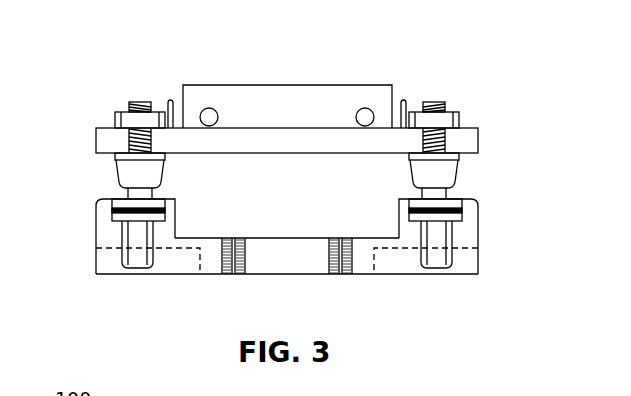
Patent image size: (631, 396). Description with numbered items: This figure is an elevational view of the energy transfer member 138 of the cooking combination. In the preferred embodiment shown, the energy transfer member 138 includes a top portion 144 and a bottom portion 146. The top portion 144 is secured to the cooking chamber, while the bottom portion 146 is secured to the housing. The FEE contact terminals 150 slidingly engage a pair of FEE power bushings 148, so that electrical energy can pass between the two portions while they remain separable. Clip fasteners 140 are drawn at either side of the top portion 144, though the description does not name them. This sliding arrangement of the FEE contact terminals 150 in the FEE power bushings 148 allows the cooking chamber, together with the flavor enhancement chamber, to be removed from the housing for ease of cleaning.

The energy transfer member 138 is at (262, 32).
The clip fastener 140 is at (170, 100).
The top portion 144 is at (337, 85).
The bottom portion 146 is at (258, 274).
The FEE power bushings 148 is at (97, 218).
The FEE contact terminals 150 is at (140, 258).